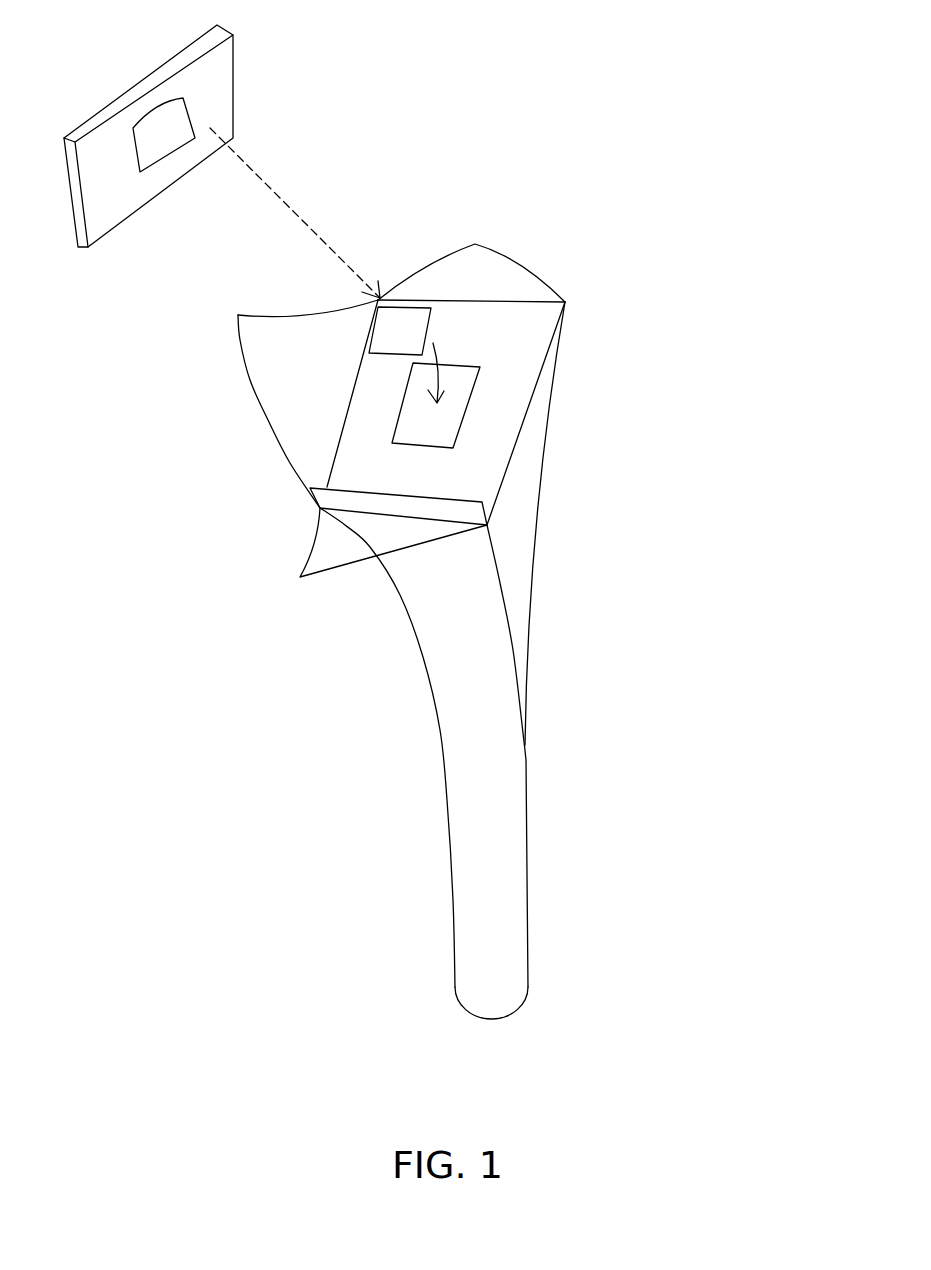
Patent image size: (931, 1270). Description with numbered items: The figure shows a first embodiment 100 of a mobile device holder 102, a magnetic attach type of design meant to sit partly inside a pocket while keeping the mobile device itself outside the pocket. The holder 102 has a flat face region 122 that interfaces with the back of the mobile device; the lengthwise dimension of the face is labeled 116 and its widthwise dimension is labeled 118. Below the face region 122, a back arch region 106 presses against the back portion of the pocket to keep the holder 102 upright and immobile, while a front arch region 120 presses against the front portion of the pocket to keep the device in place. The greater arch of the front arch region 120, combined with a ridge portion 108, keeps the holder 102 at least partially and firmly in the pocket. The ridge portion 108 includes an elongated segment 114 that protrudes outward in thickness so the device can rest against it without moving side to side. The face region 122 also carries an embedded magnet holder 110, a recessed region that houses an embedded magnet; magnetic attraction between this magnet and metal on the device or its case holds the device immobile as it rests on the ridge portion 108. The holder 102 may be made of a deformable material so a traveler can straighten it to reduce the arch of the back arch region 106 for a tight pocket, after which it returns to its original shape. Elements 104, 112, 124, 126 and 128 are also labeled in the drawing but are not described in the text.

The first embodiment 100 is at (410, 522).
The mobile device holder 102 is at (473, 763).
The head 104 is at (469, 479).
The back arch region 106 is at (552, 413).
The ridge portion 108 is at (437, 448).
The embedded magnet holder 110 is at (455, 382).
The lower tip of head 112 is at (372, 559).
The elongated segment 114 is at (316, 503).
The lengthwise dimension 116 is at (280, 398).
The widthwise dimension 118 is at (471, 258).
The front arch region 120 is at (423, 657).
The face region 122 is at (480, 467).
The mounting slot 124 is at (430, 323).
The detachable plate 126 is at (236, 136).
The window opening in plate 128 is at (193, 117).